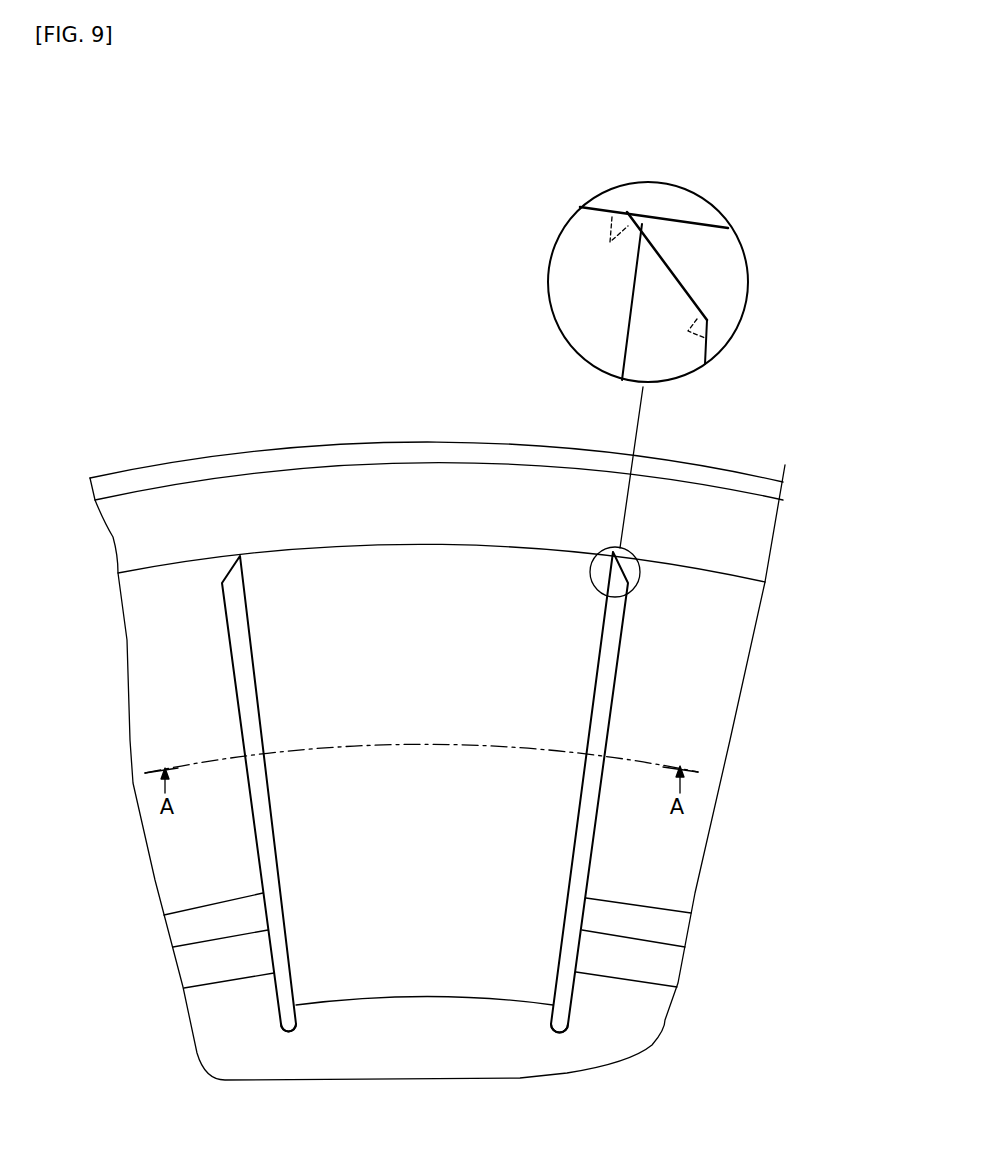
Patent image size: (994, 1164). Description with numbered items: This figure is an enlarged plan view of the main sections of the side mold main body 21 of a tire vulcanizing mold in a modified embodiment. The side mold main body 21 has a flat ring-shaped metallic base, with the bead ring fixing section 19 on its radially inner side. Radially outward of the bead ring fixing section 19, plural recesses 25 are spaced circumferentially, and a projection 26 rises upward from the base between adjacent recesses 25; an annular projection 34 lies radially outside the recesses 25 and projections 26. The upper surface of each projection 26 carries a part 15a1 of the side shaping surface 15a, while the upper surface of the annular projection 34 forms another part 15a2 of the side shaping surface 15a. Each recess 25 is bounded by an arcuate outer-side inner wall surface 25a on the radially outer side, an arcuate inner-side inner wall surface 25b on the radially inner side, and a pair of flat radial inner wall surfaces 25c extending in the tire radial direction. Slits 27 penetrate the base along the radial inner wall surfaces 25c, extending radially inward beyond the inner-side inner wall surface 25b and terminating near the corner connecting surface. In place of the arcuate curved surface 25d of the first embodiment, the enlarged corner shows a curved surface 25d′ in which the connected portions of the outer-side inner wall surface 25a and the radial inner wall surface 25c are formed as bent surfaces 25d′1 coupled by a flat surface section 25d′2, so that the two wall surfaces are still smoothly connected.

The side mold main body 21 is at (429, 582).
The annular projection 34 is at (387, 463).
The part of the side shaping surface 15a2 is at (317, 515).
The part of the side shaping surface 15a1 is at (180, 713).
The side shaping surface 15a is at (429, 721).
The recess 25 is at (420, 792).
The outer-side inner wall surface 25a is at (443, 545).
The inner-side inner wall surface 25b is at (368, 998).
The radial inner wall surface 25c is at (258, 835).
The curved surface 25d is at (230, 573).
The curved surface 25d′ is at (730, 282).
The bent surface 25d′1 is at (630, 212).
The flat surface section 25d′2 is at (673, 270).
The projection 26 is at (183, 667).
The slit 27 is at (282, 1027).
The bead ring fixing section 19 is at (450, 1042).